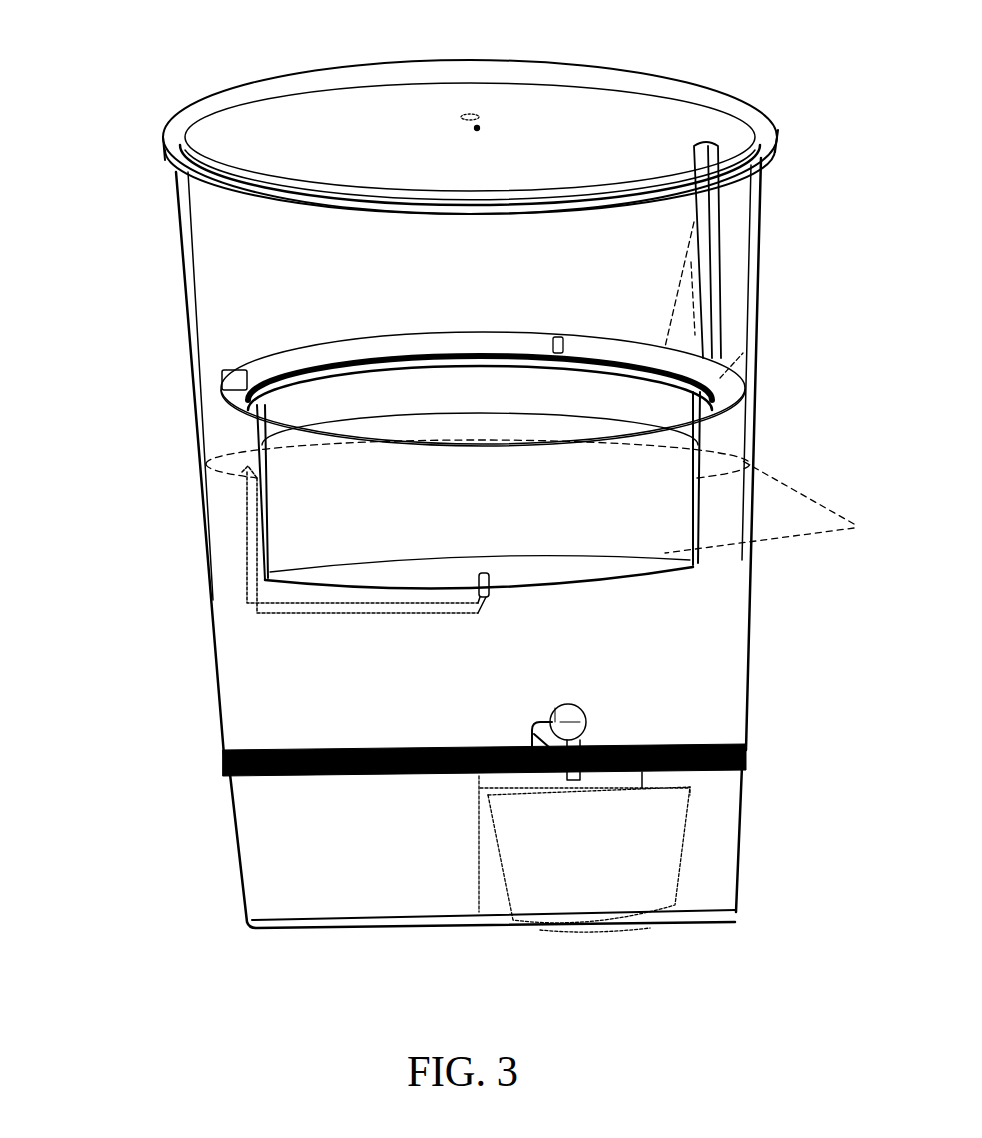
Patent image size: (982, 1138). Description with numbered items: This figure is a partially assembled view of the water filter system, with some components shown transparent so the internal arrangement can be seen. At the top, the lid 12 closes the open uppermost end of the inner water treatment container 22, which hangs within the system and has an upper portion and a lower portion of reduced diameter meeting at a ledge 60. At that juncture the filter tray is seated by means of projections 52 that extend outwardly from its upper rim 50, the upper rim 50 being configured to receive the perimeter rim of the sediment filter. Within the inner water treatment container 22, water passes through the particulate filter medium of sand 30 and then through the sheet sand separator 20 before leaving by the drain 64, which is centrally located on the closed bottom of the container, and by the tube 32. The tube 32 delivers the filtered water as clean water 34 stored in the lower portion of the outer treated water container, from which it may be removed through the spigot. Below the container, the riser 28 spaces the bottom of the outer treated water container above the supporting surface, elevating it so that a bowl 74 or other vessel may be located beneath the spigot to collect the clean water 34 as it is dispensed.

The lid 12 is at (255, 88).
The inner water treatment container 22 is at (210, 335).
The ledge 60 is at (765, 312).
The upper rim 50 is at (250, 355).
The projections 52 is at (222, 378).
The clean water 34 is at (213, 460).
The sand 30 is at (781, 506).
The tube 32 is at (275, 612).
The drain 64 is at (490, 587).
The sheet sand separator 20 is at (610, 573).
The bowl 74 is at (625, 858).
The riser 28 is at (277, 848).